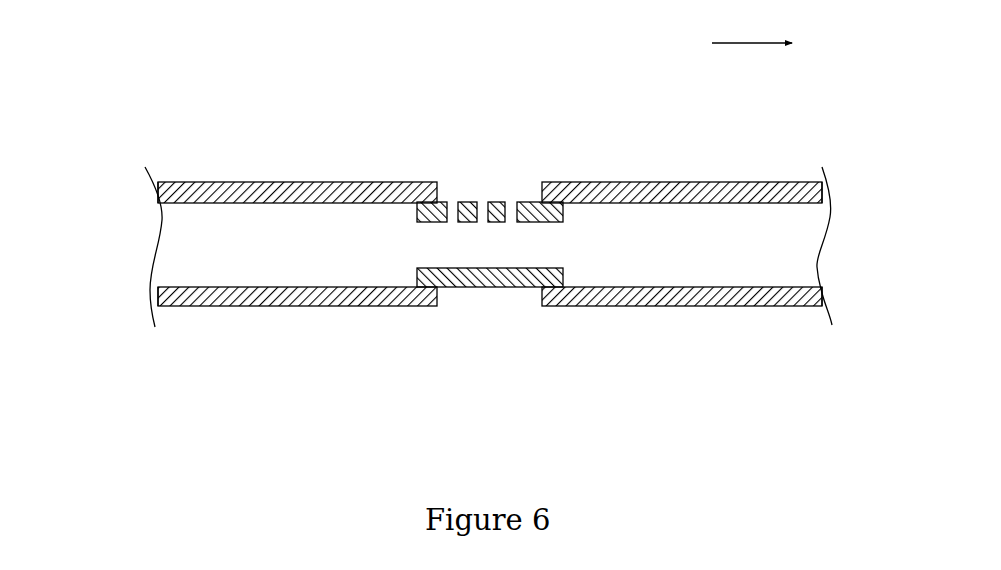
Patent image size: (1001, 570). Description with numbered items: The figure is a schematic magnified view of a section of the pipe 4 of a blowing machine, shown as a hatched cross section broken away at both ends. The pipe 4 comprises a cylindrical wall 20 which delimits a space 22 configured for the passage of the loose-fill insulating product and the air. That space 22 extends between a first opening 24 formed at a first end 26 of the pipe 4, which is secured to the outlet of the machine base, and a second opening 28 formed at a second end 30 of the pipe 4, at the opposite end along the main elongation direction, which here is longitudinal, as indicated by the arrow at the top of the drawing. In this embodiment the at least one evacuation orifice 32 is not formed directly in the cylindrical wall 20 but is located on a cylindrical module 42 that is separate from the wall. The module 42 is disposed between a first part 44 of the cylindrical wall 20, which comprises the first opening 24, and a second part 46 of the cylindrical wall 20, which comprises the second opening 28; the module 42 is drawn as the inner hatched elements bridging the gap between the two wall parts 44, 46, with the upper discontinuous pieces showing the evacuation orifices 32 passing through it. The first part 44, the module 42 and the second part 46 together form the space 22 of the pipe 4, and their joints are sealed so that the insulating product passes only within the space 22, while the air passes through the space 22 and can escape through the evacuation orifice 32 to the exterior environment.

The pipe 4 is at (480, 210).
The cylindrical wall 20 is at (680, 182).
The space 22 is at (490, 333).
The first opening 24 is at (90, 216).
The first end 26 is at (155, 190).
The second opening 28 is at (880, 244).
The second end 30 is at (823, 293).
The evacuation orifice 32 is at (510, 212).
The module 42 is at (463, 287).
The first part of the cylindrical wall 44 is at (257, 306).
The second part of the cylindrical wall 46 is at (623, 306).